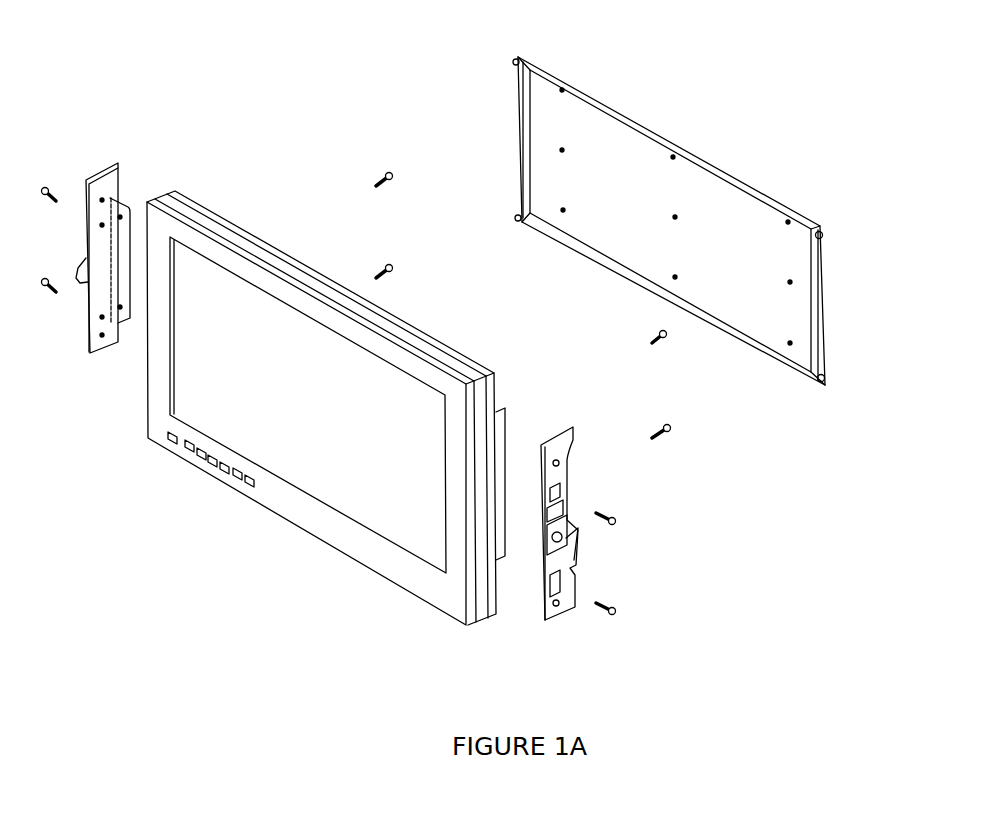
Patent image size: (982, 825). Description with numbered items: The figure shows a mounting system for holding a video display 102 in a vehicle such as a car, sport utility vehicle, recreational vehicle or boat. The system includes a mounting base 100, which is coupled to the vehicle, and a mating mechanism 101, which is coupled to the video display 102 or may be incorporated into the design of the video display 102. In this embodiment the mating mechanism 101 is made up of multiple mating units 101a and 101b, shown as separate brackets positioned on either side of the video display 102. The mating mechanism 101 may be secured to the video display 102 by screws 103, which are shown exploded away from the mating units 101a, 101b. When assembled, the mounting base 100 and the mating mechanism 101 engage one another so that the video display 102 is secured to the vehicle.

The mounting base 100 is at (612, 103).
The mating mechanism 101 is at (112, 162).
The mating unit 101a is at (101, 352).
The mating unit 101b is at (556, 612).
The video display 102 is at (404, 572).
The screws 103 is at (662, 437).